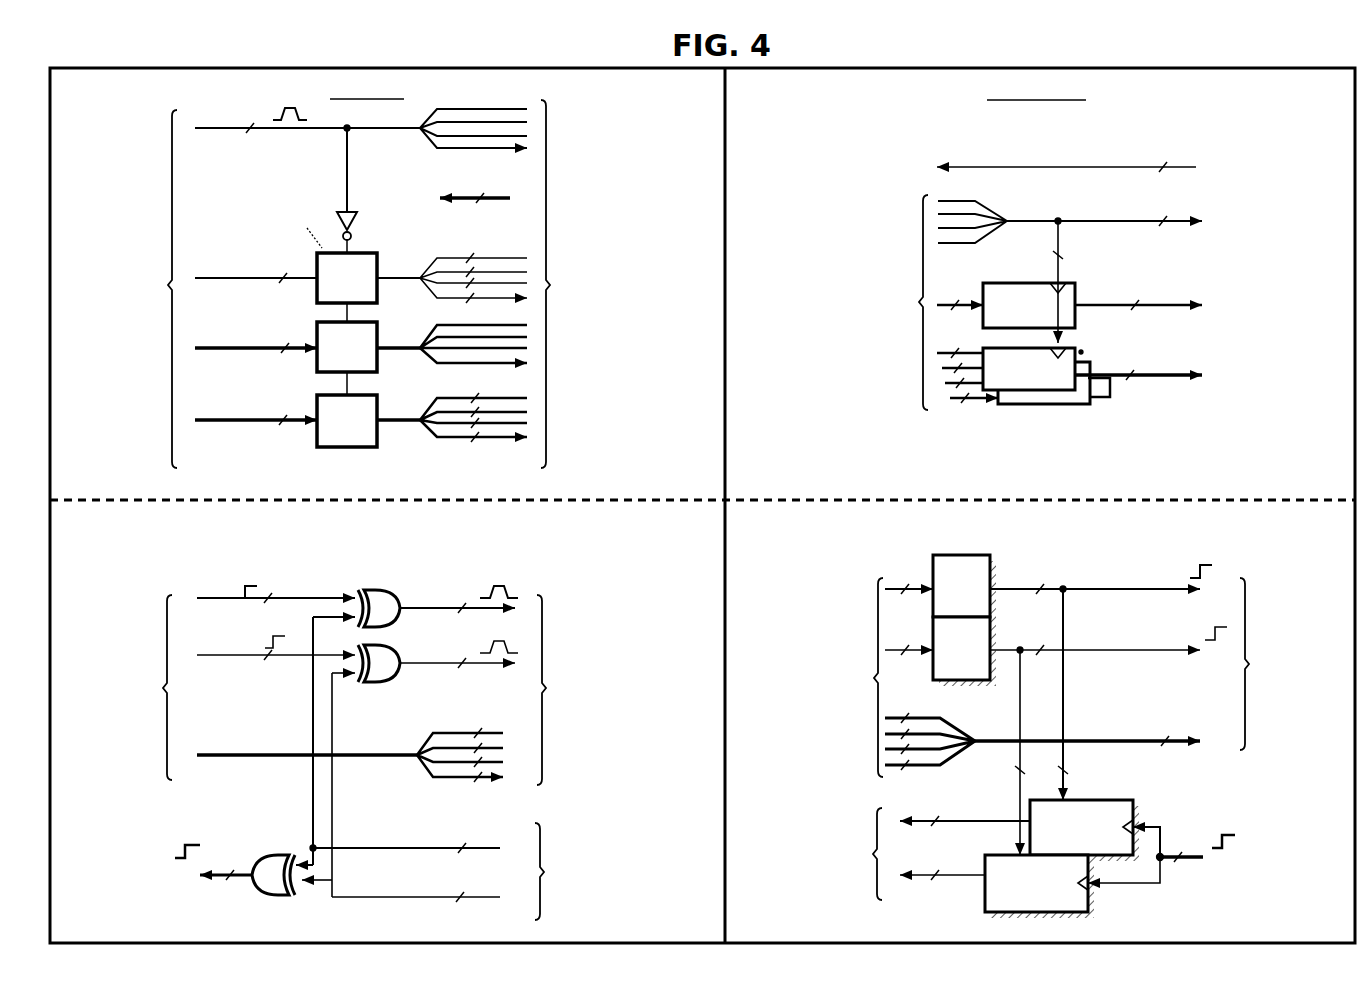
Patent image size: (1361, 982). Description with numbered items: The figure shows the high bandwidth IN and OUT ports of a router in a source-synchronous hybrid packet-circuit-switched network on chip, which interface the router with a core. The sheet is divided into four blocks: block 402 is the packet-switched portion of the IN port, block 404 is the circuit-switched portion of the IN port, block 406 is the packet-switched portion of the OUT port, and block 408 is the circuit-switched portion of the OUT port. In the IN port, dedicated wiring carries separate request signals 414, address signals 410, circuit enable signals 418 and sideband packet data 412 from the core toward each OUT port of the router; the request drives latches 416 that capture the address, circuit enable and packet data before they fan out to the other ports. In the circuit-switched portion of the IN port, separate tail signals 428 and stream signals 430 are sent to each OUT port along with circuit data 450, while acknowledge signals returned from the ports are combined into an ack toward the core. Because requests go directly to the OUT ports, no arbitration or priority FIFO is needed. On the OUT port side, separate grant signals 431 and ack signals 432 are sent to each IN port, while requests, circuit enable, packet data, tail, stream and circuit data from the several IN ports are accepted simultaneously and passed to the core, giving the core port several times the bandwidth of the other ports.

The packet-switched portion of the IN port 402 is at (109, 106).
The circuit-switched portion of the IN port 404 is at (109, 541).
The packet-switched portion of the OUT port 406 is at (1296, 105).
The circuit-switched portion of the OUT port 408 is at (1314, 540).
The address signals 410 is at (225, 251).
The sideband packet data 412 is at (224, 381).
The request signals 414 is at (240, 100).
The latches 416 is at (377, 400).
The circuit enable signals 418 is at (226, 315).
The tail signals 428 is at (213, 571).
The stream signals 430 is at (238, 658).
The grant signals 431 is at (1163, 137).
The ack signals 432 is at (1192, 823).
The circuit data 450 is at (237, 728).